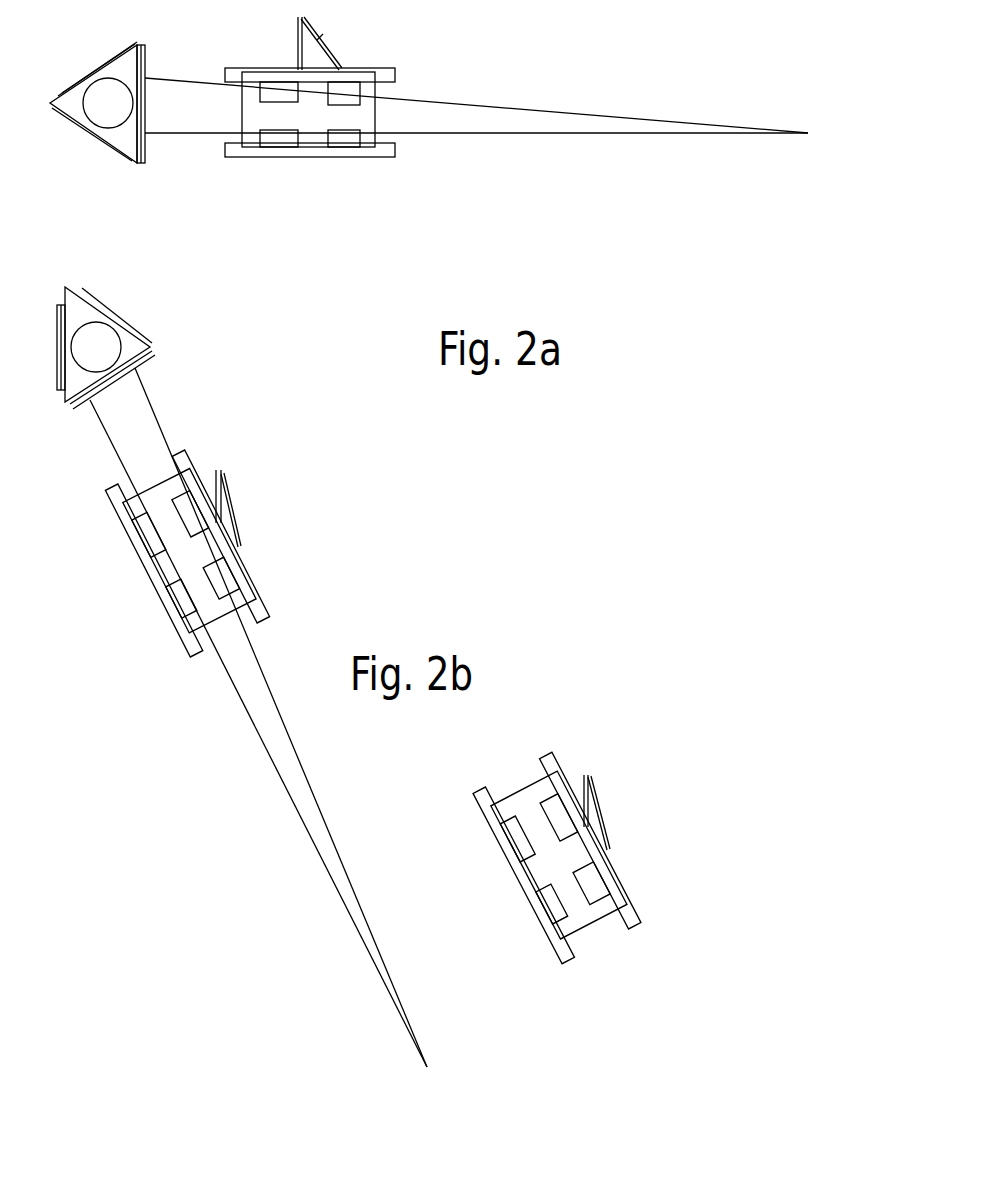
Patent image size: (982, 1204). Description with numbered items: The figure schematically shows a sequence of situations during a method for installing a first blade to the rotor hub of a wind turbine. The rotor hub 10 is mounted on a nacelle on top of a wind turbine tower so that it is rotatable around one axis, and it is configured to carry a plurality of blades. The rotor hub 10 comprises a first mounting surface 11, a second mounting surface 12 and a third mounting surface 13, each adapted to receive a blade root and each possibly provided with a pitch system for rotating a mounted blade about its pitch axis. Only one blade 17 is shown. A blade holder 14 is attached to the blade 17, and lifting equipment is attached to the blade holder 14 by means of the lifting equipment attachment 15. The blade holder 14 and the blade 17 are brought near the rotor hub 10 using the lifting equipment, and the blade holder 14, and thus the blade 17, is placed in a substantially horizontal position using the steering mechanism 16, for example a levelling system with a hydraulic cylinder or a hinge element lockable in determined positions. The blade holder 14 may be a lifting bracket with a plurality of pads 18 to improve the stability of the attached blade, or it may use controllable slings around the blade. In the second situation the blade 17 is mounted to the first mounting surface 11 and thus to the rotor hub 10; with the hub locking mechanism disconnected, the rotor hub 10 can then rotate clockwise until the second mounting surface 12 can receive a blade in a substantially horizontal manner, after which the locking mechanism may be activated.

In FIG. 2a, the rotor hub 10 is at (133, 170).
In FIG. 2b, the rotor hub 10 is at (160, 355).
In FIG. 2a, the first mounting surface 11 is at (148, 142).
In FIG. 2b, the first mounting surface 11 is at (88, 413).
In FIG. 2a, the second mounting surface 12 is at (88, 145).
In FIG. 2b, the second mounting surface 12 is at (53, 368).
In FIG. 2a, the third mounting surface 13 is at (97, 57).
In FIG. 2a, the blade holder 14 is at (338, 163).
In FIG. 2b, the blade holder 14 is at (528, 772).
In FIG. 2a, the lifting equipment attachment 15 is at (246, 43).
In FIG. 2a, the steering mechanism 16 is at (366, 43).
In FIG. 2a, the blade 17 is at (548, 142).
In FIG. 2b, the blade 17 is at (278, 803).
In FIG. 2a, the pads 18 is at (345, 135).